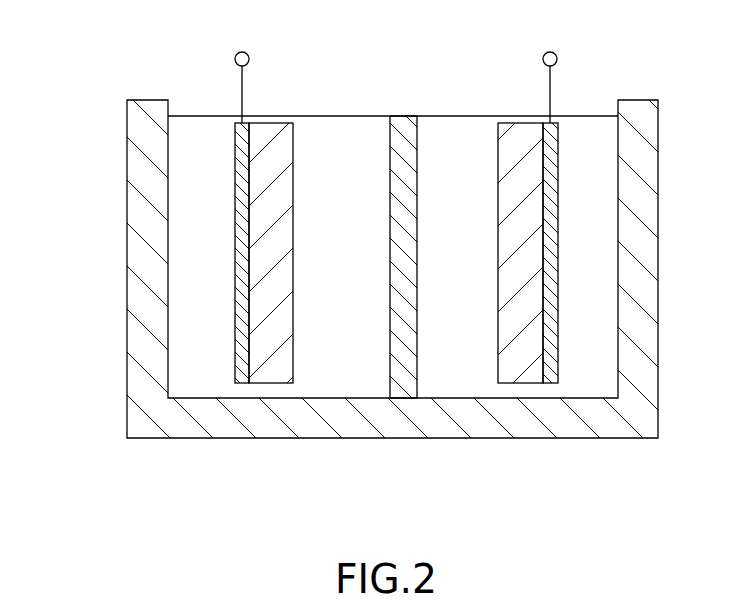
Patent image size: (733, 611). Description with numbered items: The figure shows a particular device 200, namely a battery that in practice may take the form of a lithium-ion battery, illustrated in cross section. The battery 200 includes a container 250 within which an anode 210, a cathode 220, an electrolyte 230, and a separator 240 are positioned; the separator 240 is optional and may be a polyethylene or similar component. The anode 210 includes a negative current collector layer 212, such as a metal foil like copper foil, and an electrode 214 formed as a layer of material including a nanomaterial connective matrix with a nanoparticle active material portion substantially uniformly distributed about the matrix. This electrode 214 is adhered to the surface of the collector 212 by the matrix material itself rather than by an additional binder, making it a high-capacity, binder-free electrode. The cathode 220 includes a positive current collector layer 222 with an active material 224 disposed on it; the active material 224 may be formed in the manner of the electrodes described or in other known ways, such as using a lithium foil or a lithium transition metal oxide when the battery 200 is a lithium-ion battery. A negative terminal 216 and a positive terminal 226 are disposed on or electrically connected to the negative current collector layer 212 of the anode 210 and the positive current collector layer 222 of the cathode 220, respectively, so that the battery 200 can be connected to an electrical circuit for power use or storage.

The device 200 is at (108, 74).
The anode 210 is at (589, 383).
The negative current collector layer 212 is at (550, 267).
The electrode 214 is at (532, 210).
The negative terminal 216 is at (548, 75).
The cathode 220 is at (212, 388).
The positive current collector layer 222 is at (243, 303).
The active material 224 is at (268, 243).
The positive terminal 226 is at (243, 73).
The electrolyte 230 is at (470, 382).
The separator 240 is at (388, 143).
The container 250 is at (143, 164).